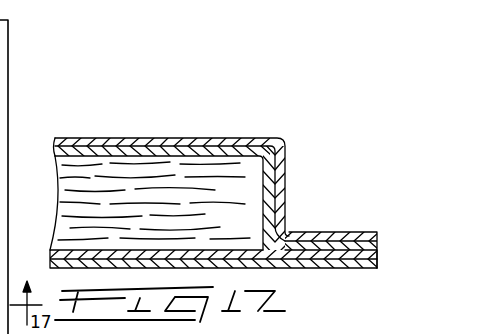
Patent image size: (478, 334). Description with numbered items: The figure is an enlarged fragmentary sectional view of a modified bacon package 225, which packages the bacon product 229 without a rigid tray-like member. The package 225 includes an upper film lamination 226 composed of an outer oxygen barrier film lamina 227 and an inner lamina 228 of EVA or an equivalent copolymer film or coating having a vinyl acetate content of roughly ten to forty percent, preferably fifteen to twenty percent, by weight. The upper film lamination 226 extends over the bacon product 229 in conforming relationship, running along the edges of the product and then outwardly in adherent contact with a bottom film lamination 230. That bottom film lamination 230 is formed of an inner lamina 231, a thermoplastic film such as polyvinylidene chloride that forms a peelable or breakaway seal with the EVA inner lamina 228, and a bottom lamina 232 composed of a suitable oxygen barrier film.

The bacon package 225 is at (18, 62).
The upper film lamination 226 is at (384, 243).
The outer oxygen barrier film lamina 227 is at (126, 146).
The inner lamina 228 is at (218, 153).
The bacon product 229 is at (254, 200).
The bottom film lamination 230 is at (385, 253).
The inner lamina 231 is at (50, 256).
The bottom lamina 232 is at (347, 265).